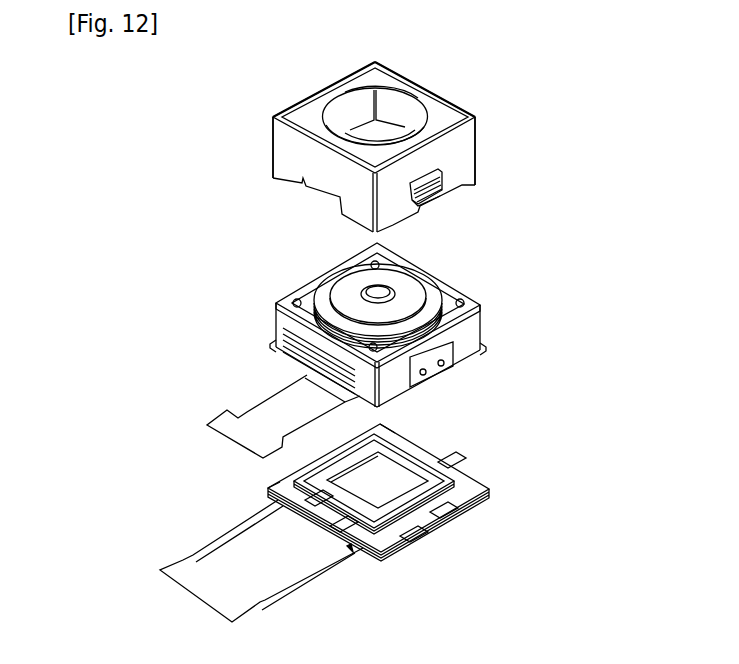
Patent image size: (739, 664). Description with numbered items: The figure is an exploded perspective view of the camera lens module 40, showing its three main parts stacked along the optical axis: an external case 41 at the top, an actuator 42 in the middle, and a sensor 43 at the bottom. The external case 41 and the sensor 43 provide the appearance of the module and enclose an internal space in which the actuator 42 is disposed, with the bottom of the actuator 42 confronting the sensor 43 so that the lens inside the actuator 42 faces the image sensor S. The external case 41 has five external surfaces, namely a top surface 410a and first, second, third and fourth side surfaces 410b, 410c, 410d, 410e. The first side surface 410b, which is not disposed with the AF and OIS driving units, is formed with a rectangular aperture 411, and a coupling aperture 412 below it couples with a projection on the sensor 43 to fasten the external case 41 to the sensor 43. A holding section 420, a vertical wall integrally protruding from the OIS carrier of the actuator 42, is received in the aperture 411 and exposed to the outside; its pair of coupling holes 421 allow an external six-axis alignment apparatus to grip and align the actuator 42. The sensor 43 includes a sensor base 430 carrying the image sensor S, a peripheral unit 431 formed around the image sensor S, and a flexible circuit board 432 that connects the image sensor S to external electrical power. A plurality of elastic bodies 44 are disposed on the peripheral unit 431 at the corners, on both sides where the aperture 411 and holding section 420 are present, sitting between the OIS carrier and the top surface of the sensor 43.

The camera lens module 40 is at (510, 29).
The external case 41 is at (496, 134).
The top surface 410a is at (452, 110).
The first side surface 410b is at (460, 153).
The second side surface 410c is at (280, 153).
The third side surface 410d is at (323, 85).
The fourth side surface 410e is at (423, 87).
The aperture 411 is at (450, 180).
The coupling aperture 412 is at (457, 215).
The actuator 42 is at (498, 312).
The holding section 420 is at (437, 378).
The coupling hole 421 is at (442, 366).
The sensor 43 is at (487, 463).
The sensor base 430 is at (387, 557).
The peripheral unit 431 is at (270, 495).
The flexible circuit board 432 is at (270, 580).
The elastic body 44 is at (440, 460).
The image sensor S is at (390, 480).